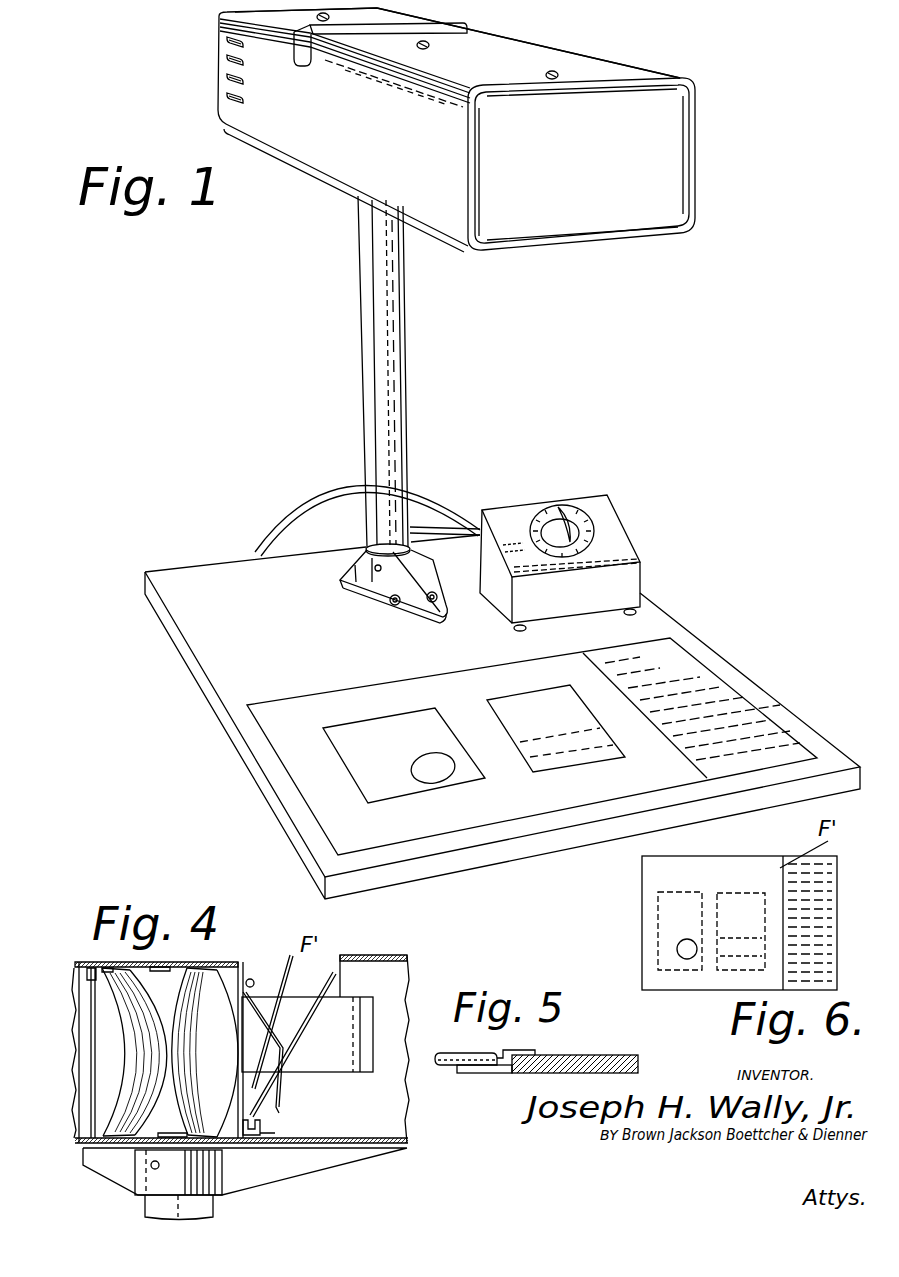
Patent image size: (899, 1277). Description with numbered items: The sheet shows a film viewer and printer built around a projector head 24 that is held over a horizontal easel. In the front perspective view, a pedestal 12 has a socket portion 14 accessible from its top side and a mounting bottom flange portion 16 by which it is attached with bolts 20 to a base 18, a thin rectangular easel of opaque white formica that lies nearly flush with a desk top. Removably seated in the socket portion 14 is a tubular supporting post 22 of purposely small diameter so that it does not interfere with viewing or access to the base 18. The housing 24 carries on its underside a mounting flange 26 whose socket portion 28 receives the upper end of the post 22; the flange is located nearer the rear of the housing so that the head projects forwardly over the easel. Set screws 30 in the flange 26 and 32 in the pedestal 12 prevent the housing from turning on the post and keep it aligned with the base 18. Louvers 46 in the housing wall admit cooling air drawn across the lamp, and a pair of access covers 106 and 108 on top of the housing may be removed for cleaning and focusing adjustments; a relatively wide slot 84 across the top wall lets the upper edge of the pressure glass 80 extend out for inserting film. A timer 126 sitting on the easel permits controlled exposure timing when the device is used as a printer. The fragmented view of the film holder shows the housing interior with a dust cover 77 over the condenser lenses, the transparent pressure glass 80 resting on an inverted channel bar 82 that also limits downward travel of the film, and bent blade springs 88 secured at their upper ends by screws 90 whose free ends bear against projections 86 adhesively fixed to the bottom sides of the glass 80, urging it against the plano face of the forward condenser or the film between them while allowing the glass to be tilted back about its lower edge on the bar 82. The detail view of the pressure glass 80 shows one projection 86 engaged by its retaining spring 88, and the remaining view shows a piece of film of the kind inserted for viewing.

In FIG. 1, the pedestal 12 is at (352, 585).
In FIG. 1, the socket portion 14 is at (415, 560).
In FIG. 1, the mounting bottom flange portion 16 is at (412, 612).
In FIG. 1, the base 18 is at (222, 668).
In FIG. 1, the bolts 20 is at (438, 597).
In FIG. 1, the supporting post 22 is at (395, 363).
In FIG. 1, the projector head 24 is at (325, 145).
In FIG. 4, the mounting flange 26 is at (295, 1160).
In FIG. 4, the socket portion 28 is at (202, 1182).
In FIG. 4, the set screw 30 is at (152, 1168).
In FIG. 1, the set screw 32 is at (378, 572).
In FIG. 1, the louvers 46 is at (226, 82).
In FIG. 4, the cover 77 is at (210, 970).
In FIG. 1, the pressure glass 80 is at (430, 23).
In FIG. 4, the pressure glass 80 is at (302, 1032).
In FIG. 5, the pressure glass 80 is at (583, 1055).
In FIG. 4, the channel bar 82 is at (267, 1125).
In FIG. 1, the slot 84 is at (295, 52).
In FIG. 4, the projections 86 is at (278, 1107).
In FIG. 5, the projections 86 is at (483, 1075).
In FIG. 4, the bent blade springs 88 is at (255, 995).
In FIG. 5, the bent blade springs 88 is at (458, 1040).
In FIG. 4, the screws 90 is at (254, 979).
In FIG. 1, the access cover 106 is at (262, 15).
In FIG. 4, the access cover 106 is at (177, 961).
In FIG. 1, the access cover 108 is at (533, 63).
In FIG. 4, the access cover 108 is at (378, 954).
In FIG. 1, the timer 126 is at (617, 532).